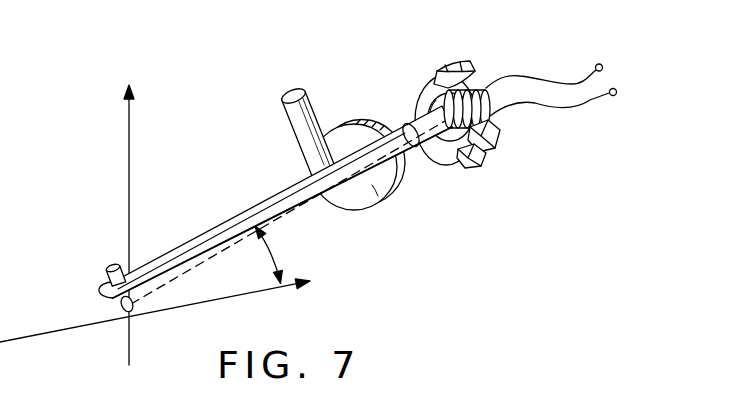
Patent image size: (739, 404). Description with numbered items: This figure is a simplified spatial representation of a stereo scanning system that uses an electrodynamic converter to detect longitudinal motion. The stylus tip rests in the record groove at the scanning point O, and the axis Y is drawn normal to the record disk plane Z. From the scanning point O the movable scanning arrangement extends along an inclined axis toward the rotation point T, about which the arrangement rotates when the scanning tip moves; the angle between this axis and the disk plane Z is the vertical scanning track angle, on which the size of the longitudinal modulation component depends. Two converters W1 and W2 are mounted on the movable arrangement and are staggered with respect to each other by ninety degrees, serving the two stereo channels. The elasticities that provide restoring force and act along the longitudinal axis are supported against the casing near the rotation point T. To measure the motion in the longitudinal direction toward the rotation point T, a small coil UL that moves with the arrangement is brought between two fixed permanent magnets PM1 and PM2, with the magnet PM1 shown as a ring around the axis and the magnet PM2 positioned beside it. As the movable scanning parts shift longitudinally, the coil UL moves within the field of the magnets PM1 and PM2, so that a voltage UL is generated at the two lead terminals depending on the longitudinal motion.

The converter W1 is at (298, 120).
The converter W2 is at (412, 152).
The fixed permanent magnet PM1 is at (423, 82).
The fixed permanent magnet PM2 is at (461, 63).
The north pole magnet pieces N is at (486, 149).
The rotation point T is at (373, 185).
The small coil UL is at (568, 89).
The axis Y is at (130, 207).
The record disk plane Z is at (158, 310).
The scanning point O is at (119, 330).